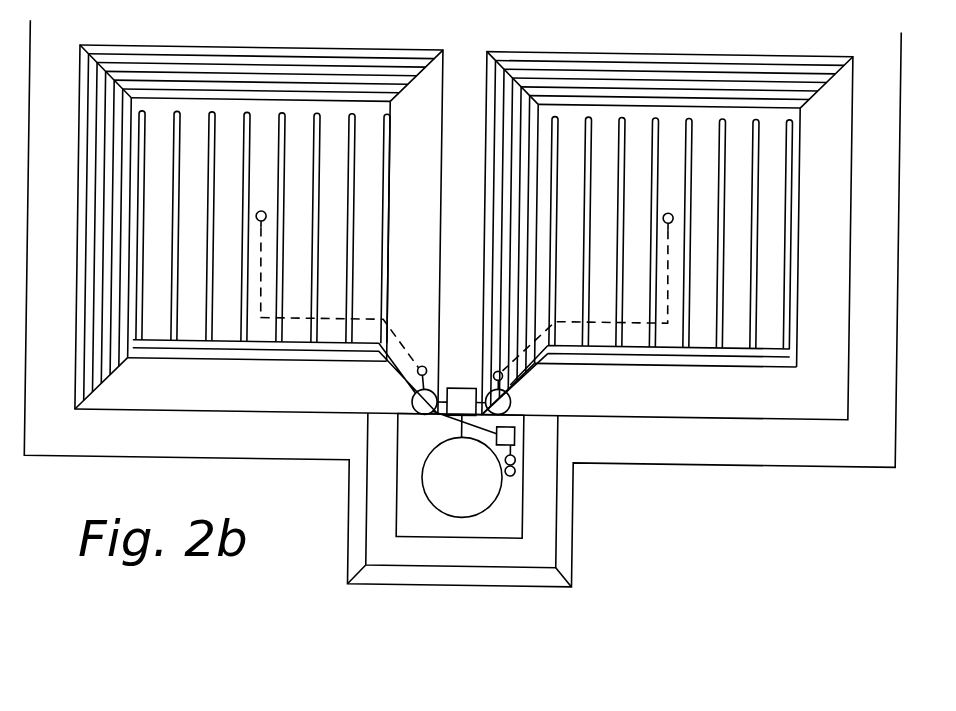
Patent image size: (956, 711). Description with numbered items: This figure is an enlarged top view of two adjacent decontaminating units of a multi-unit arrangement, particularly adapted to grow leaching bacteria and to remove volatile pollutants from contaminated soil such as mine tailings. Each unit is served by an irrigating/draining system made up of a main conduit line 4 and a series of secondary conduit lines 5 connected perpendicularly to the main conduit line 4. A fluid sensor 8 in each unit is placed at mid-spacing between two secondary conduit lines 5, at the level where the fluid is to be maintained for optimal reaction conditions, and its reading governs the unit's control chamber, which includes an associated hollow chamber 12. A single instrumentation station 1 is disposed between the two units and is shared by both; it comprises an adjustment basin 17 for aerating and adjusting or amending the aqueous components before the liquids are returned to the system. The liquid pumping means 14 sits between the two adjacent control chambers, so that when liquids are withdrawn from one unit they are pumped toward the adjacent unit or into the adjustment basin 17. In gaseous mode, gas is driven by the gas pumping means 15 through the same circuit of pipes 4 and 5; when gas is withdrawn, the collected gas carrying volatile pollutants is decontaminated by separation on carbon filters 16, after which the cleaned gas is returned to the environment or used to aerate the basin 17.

The instrumentation station 1 is at (311, 602).
The main conduit line 4 is at (529, 296).
The secondary conduit lines 5 is at (305, 77).
The fluid sensor 8 is at (445, 270).
The hollow chamber 12 is at (336, 351).
The liquid pumping means 14 is at (387, 337).
The gas pumping means 15 is at (569, 438).
The carbon filters 16 is at (574, 490).
The adjustment basin 17 is at (383, 450).